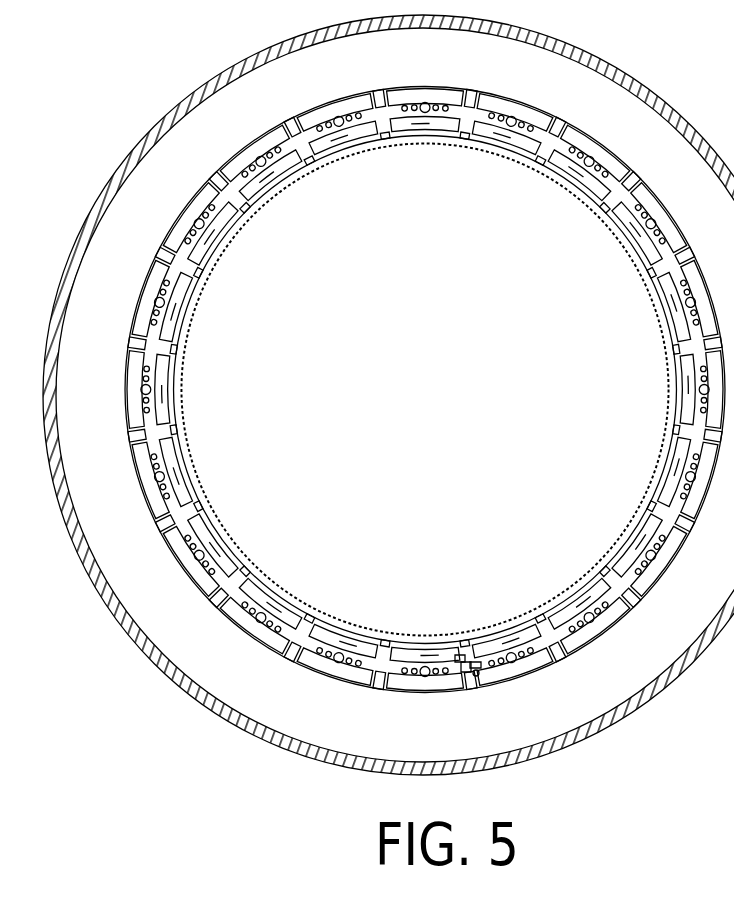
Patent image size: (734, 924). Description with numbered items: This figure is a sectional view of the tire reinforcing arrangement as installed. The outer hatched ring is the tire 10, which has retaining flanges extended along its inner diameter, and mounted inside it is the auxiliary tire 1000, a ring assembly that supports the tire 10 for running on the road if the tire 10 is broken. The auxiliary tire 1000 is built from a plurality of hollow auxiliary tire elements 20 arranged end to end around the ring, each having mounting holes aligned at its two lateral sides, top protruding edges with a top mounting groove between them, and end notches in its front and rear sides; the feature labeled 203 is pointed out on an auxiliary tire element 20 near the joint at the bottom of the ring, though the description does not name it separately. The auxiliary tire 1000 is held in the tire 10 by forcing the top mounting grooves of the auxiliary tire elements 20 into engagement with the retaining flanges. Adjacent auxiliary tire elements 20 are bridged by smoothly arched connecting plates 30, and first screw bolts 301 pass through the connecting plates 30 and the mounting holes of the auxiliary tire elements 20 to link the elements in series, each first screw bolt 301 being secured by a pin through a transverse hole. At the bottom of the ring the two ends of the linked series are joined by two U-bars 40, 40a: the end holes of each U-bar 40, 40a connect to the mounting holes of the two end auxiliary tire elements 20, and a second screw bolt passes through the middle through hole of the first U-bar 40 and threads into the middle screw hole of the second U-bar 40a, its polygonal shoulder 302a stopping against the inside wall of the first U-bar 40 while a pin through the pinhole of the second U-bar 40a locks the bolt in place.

The tire 10 is at (100, 597).
The auxiliary tire 1000 is at (347, 728).
The auxiliary tire element 20 is at (433, 662).
The connecting plate 30 is at (378, 666).
The first screw bolt 301 is at (340, 652).
The notch of inner segment 203 is at (460, 660).
The U-bar 40 is at (459, 672).
The second U-bar 40a is at (478, 676).
The polygonal shoulder 302a is at (480, 670).